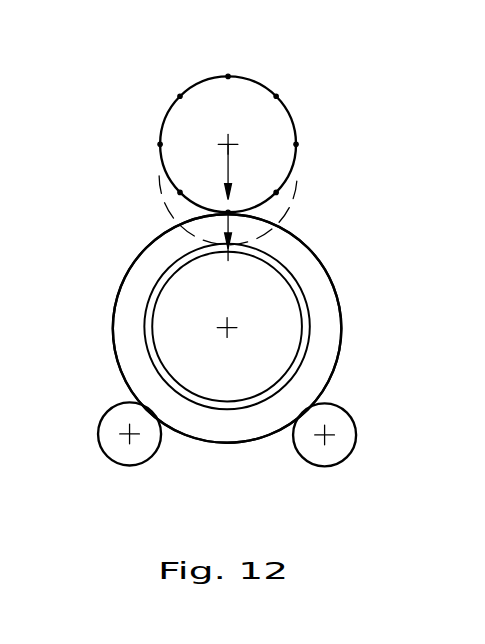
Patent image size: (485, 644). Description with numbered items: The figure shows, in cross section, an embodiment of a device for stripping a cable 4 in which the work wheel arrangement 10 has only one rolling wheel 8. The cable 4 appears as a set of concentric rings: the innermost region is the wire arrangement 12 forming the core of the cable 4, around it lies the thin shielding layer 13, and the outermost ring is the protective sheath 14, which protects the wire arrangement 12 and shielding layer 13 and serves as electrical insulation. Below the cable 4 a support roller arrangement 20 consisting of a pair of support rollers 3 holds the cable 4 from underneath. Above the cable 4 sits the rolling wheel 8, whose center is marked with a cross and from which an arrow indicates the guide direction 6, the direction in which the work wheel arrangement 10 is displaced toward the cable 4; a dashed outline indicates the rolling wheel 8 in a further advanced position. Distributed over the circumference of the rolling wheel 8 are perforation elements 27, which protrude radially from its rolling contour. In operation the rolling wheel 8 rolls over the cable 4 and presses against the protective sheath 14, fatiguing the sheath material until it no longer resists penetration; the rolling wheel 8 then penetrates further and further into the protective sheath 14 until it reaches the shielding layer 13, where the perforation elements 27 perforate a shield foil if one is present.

The support roller 3 is at (118, 430).
The cable 4 is at (140, 260).
The guide direction 6 is at (227, 163).
The rolling wheel 8 is at (197, 128).
The work wheel arrangement 10 is at (352, 204).
The wire arrangement 12 is at (187, 325).
The shielding layer 13 is at (310, 323).
The protective sheath 14 is at (312, 278).
The support roller arrangement 20 is at (285, 477).
The perforation elements 27 is at (274, 79).